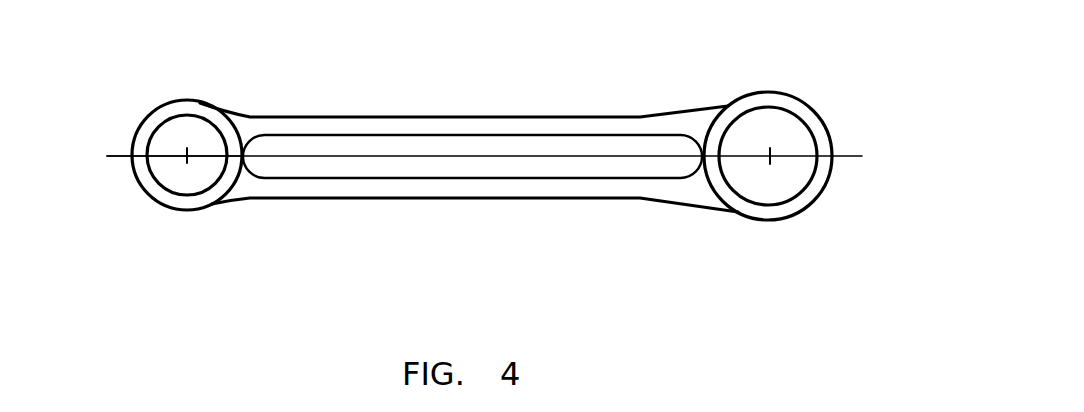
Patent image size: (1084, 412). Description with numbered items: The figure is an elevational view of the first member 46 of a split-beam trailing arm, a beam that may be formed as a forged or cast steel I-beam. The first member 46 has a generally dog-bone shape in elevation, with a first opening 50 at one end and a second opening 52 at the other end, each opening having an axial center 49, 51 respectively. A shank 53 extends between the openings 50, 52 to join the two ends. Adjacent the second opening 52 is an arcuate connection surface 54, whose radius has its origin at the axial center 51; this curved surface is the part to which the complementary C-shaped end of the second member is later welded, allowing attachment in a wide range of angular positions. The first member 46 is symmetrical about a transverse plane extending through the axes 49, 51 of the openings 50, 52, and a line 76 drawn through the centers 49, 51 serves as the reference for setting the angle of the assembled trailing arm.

The first member 46 is at (425, 117).
The axial center 49 is at (186, 160).
The first opening 50 is at (192, 132).
The axial center 51 is at (773, 158).
The second opening 52 is at (747, 130).
The shank 53 is at (468, 170).
The arcuate connection surface 54 is at (817, 118).
The line 76 is at (118, 157).